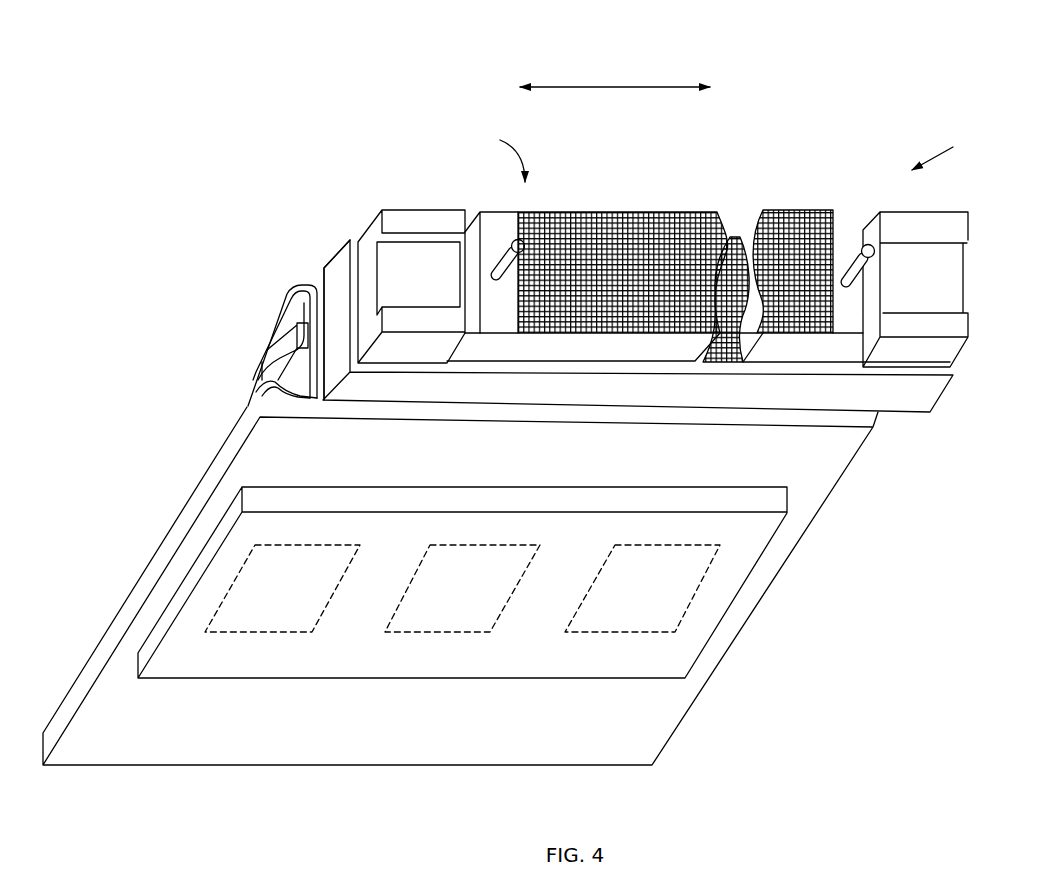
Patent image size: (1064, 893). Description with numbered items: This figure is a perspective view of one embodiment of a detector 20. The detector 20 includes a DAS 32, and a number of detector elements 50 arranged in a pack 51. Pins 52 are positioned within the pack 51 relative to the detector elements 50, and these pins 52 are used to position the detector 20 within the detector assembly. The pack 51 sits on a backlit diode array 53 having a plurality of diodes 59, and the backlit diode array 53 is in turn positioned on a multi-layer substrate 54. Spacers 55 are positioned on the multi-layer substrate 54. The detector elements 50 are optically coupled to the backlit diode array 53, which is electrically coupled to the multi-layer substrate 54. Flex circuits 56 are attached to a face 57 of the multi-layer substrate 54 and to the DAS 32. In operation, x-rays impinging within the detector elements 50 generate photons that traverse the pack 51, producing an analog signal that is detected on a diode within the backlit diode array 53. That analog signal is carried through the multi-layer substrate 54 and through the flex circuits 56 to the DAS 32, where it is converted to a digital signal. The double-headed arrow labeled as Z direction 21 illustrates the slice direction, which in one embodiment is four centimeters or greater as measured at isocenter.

The detector 20 is at (945, 149).
The Z direction 21 is at (630, 80).
The DAS 32 is at (766, 562).
The detector elements 50 is at (585, 212).
The pack 51 is at (498, 147).
The pins 52 is at (500, 244).
The backlit diode array 53 is at (833, 363).
The multi-layer substrate 54 is at (930, 393).
The spacers 55 is at (418, 221).
The flex circuits 56 is at (268, 380).
The face 57 is at (323, 268).
The diodes 59 is at (730, 237).